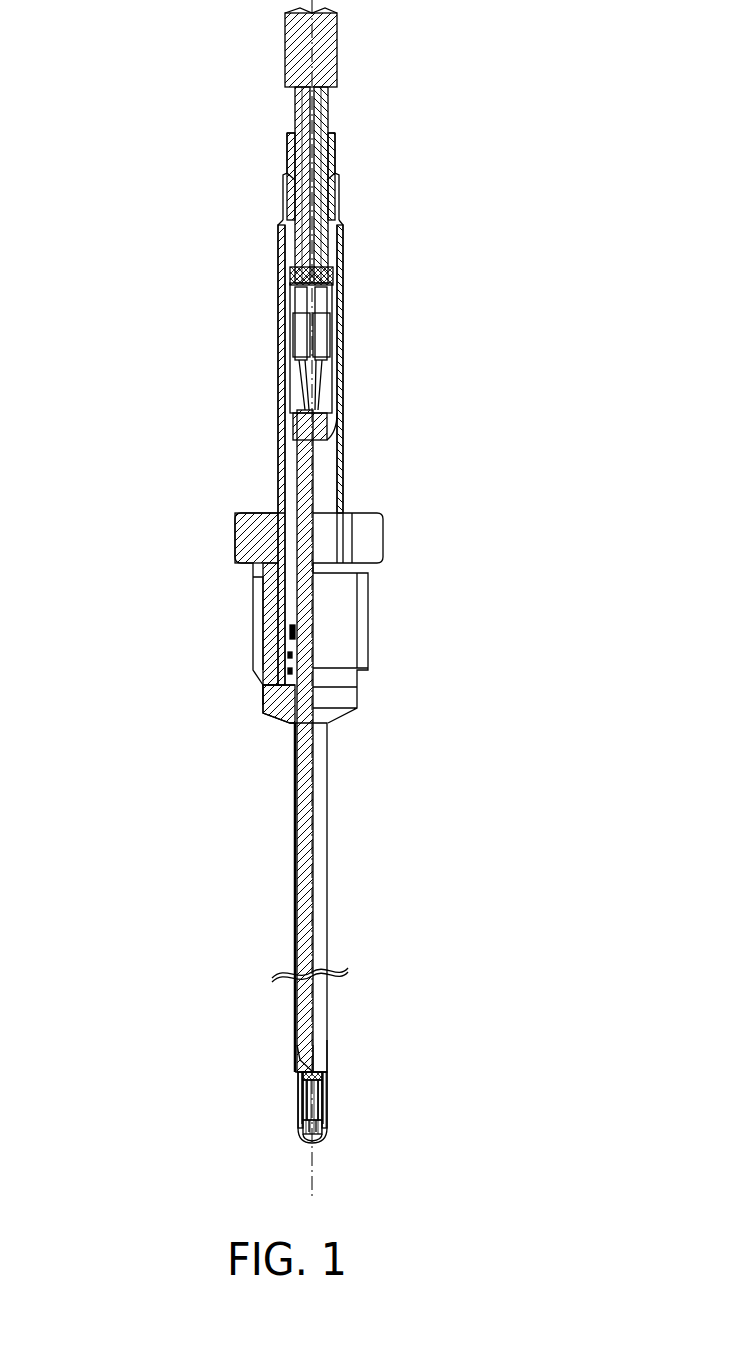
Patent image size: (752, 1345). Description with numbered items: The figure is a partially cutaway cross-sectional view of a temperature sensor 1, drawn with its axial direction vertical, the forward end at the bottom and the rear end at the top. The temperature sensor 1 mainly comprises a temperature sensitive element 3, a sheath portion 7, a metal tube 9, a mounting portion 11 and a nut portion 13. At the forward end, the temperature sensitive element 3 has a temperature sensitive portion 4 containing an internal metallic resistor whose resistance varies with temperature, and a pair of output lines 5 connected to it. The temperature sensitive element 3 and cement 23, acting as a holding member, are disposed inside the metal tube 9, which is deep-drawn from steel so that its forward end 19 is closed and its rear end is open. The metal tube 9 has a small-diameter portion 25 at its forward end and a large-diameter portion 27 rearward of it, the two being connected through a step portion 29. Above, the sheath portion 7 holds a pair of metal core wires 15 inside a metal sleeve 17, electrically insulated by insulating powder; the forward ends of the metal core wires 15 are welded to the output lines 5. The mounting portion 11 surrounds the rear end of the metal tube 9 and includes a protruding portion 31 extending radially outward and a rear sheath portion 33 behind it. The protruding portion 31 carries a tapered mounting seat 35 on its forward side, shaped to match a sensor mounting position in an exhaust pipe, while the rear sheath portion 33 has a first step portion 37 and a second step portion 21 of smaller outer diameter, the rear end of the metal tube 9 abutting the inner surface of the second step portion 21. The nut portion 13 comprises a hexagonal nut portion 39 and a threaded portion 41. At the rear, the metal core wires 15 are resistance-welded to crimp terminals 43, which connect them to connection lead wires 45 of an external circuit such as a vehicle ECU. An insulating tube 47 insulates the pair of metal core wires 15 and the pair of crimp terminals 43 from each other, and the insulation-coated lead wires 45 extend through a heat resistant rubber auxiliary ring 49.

The temperature sensor 1 is at (95, 152).
The temperature sensitive element 3 is at (218, 1130).
The temperature sensitive portion 4 is at (300, 1135).
The output lines 5 is at (300, 1120).
The sheath portion 7 is at (296, 915).
The metal tube 9 is at (296, 1010).
The mounting portion 11 is at (147, 612).
The nut portion 13 is at (472, 513).
The metal core wires 15 is at (298, 1078).
The sleeve 17 is at (296, 1036).
The forward end 19 is at (322, 1142).
The second step portion 21 is at (283, 634).
The cement 23 is at (300, 1105).
The small-diameter portion 25 is at (328, 1108).
The large-diameter portion 27 is at (328, 1013).
The step portion 29 is at (330, 1078).
The protruding portion 31 is at (262, 698).
The rear sheath portion 33 is at (193, 597).
The mounting seat 35 is at (270, 730).
The first step portion 37 is at (283, 652).
The hexagonal nut portion 39 is at (383, 530).
The threaded portion 41 is at (368, 590).
The crimp terminals 43 is at (296, 325).
The connection lead wires 45 is at (297, 108).
The insulating tube 47 is at (333, 362).
The auxiliary ring 49 is at (336, 160).